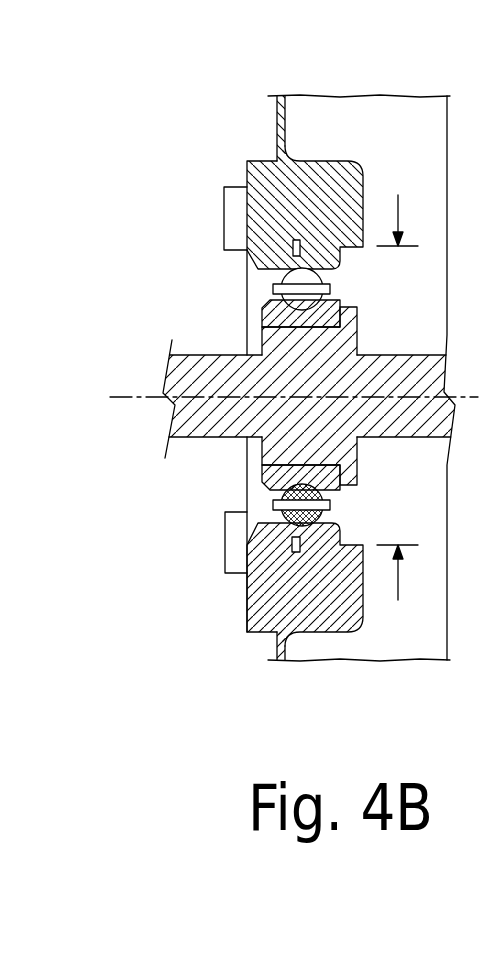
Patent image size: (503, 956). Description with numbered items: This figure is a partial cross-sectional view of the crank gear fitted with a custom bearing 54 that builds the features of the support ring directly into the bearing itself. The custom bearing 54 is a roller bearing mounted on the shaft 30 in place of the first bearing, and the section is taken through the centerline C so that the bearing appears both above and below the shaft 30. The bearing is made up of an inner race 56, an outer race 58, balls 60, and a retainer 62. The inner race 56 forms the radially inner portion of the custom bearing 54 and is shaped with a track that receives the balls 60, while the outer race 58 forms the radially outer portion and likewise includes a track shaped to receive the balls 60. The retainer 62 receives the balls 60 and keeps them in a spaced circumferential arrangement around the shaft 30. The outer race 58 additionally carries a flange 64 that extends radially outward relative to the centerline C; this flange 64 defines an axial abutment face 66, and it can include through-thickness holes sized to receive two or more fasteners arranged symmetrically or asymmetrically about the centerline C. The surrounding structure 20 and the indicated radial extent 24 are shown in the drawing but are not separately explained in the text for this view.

The flange plate 20 is at (302, 95).
The flange wall 66 is at (287, 130).
The retaining bracket 64 is at (246, 187).
The radial dimension 24 is at (397, 204).
The bearing housing / outer race 58 is at (317, 240).
The ball 62 is at (273, 284).
The bearing cage 54 is at (273, 292).
The inner race 60 is at (262, 316).
The shaft 30 is at (199, 355).
The hub 56 is at (306, 330).
The central axis C is at (413, 395).